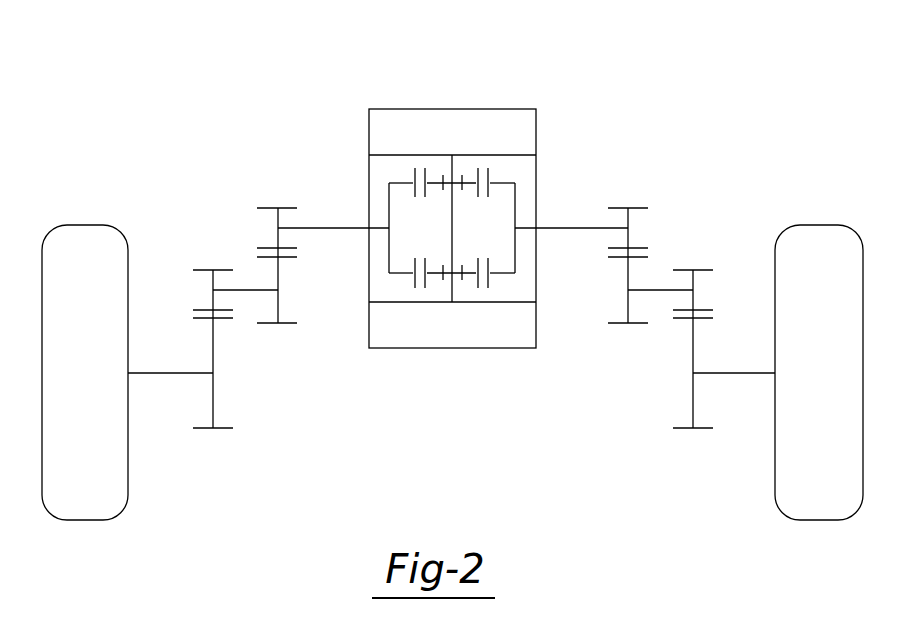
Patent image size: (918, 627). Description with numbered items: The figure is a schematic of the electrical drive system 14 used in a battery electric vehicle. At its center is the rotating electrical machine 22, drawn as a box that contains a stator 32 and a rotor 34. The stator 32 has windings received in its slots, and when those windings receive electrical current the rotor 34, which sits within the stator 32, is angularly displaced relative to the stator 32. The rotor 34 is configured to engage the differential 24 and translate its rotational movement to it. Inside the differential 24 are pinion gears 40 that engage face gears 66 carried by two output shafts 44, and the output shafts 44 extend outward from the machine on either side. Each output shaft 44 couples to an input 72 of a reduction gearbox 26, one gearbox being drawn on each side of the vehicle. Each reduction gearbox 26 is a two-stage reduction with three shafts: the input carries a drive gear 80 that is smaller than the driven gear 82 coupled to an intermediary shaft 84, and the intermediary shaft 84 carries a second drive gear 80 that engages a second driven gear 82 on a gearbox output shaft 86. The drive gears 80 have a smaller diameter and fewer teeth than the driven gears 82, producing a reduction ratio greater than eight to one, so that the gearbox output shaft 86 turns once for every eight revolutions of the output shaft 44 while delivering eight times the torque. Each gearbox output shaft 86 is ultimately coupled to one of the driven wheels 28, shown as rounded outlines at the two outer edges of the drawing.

The electrical drive system 14 is at (637, 100).
The rotating electrical machine 22 is at (422, 108).
The differential 24 is at (387, 283).
The reduction gearboxes 26 is at (208, 228).
The driven wheels 28 is at (66, 379).
The stator 32 is at (468, 144).
The rotor 34 is at (455, 220).
The pinion gears 40 is at (415, 283).
The output shafts 44 is at (376, 228).
The face gears 66 is at (470, 283).
The input 72 is at (325, 228).
The drive gear 80 is at (268, 208).
The driven gear 82 is at (213, 410).
The intermediary shaft 84 is at (247, 290).
The gearbox output shaft 86 is at (748, 373).